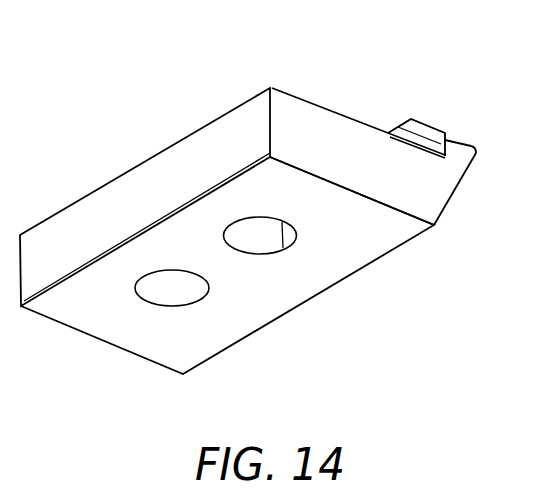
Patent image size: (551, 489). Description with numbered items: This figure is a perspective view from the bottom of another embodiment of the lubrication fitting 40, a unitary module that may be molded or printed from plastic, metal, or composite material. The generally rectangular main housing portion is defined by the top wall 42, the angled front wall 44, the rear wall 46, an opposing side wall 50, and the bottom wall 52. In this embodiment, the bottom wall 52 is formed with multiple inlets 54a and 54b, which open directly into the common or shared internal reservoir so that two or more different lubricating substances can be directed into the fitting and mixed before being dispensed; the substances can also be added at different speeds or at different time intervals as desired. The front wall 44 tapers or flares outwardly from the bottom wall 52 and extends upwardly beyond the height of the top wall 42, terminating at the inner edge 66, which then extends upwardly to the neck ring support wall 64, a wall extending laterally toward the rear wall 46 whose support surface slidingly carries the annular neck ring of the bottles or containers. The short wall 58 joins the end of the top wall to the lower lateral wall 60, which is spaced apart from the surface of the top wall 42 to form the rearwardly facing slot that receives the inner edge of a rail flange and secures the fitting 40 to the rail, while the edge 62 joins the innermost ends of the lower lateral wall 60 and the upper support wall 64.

The lubrication fitting 40 is at (266, 227).
The top wall 42 is at (286, 92).
The angled front wall 44 is at (455, 196).
The rear wall 46 is at (87, 227).
The side wall 50 is at (391, 145).
The bottom wall 52 is at (227, 296).
The inlet 54a is at (183, 287).
The inlet 54b is at (262, 231).
The short wall 58 is at (438, 101).
The lower lateral wall 60 is at (442, 149).
The edge 62 is at (393, 133).
The neck ring support wall 64 is at (427, 127).
The inner edge 66 is at (478, 151).